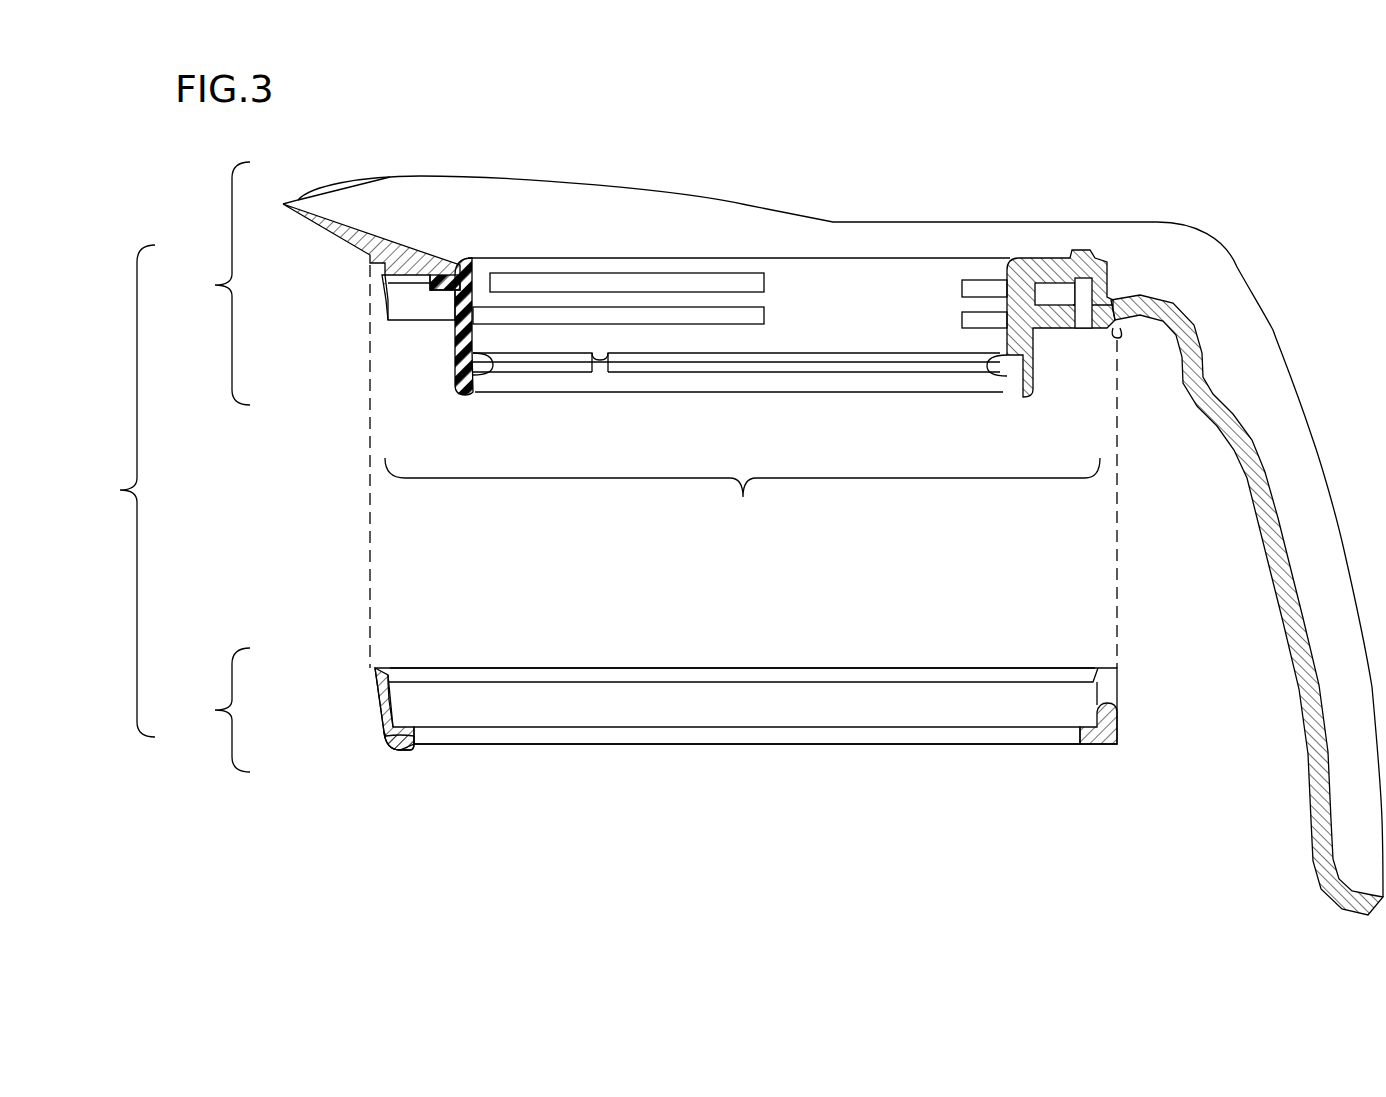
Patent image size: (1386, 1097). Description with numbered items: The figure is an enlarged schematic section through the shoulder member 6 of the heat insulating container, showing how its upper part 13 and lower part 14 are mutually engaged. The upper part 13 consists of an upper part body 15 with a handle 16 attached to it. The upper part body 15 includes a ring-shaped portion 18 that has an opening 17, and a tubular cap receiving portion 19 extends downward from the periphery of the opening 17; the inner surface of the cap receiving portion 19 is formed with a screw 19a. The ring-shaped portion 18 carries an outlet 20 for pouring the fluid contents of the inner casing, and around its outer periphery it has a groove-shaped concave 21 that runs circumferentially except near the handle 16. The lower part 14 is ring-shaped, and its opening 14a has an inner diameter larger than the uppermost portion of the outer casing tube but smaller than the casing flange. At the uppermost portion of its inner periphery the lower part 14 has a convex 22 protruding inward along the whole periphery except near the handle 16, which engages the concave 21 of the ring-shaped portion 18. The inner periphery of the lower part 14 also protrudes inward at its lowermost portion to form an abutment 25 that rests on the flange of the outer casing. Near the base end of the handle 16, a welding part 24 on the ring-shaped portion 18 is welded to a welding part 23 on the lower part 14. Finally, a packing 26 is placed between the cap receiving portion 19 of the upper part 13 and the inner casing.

The shoulder member 6 is at (597, 491).
The upper part 13 is at (207, 283).
The lower part 14 is at (641, 710).
The opening 14a is at (766, 748).
The upper part body 15 is at (742, 496).
The handle 16 is at (1228, 296).
The opening 17 is at (840, 288).
The ring-shaped portion 18 is at (748, 205).
The cap receiving portion 19 is at (474, 316).
The screw 19a is at (620, 278).
The outlet 20 is at (407, 200).
The groove-shaped concave 21 is at (362, 276).
The convex 22 is at (397, 667).
The welding part 23 is at (1103, 738).
The welding part 24 is at (1117, 338).
The abutment 25 is at (402, 738).
The packing 26 is at (438, 282).